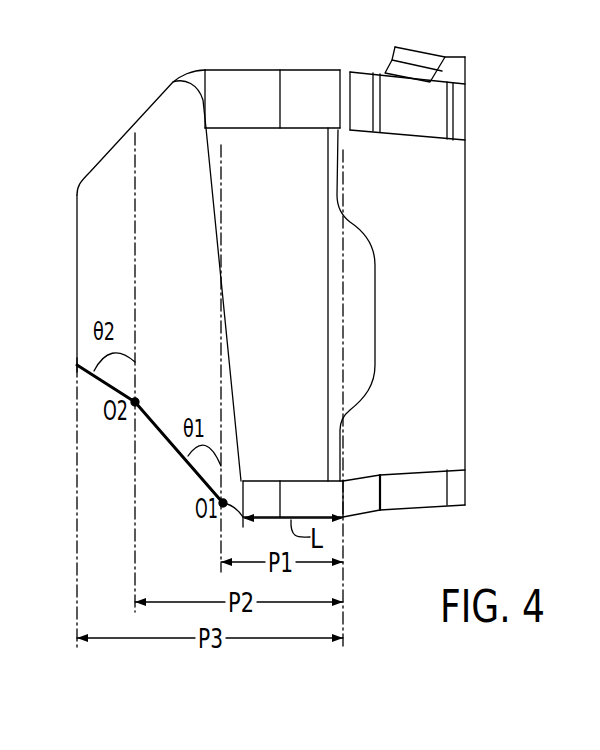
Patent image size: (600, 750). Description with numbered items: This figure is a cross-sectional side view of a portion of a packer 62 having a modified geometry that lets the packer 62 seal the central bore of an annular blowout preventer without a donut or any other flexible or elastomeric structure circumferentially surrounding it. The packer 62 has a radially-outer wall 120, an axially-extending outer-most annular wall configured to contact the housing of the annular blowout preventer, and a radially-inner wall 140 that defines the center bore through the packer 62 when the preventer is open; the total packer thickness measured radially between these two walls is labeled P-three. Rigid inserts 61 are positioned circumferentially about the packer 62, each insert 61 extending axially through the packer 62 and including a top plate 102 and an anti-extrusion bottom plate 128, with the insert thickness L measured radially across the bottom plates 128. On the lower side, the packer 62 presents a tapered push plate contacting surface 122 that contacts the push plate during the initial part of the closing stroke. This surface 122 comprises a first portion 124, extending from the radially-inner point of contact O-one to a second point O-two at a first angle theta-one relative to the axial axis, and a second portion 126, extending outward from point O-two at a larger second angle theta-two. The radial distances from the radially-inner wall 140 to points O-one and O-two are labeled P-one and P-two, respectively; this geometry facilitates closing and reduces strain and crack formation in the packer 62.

The rigid insert 61 is at (313, 49).
The packer 62 is at (127, 97).
The top plate 102 is at (250, 82).
The radially-outer wall 120 is at (78, 286).
The push plate contacting surface 122 is at (104, 450).
The first portion 124 is at (172, 447).
The second portion 126 is at (100, 383).
The bottom plate 128 is at (313, 490).
The radially-inner wall 140 is at (343, 443).